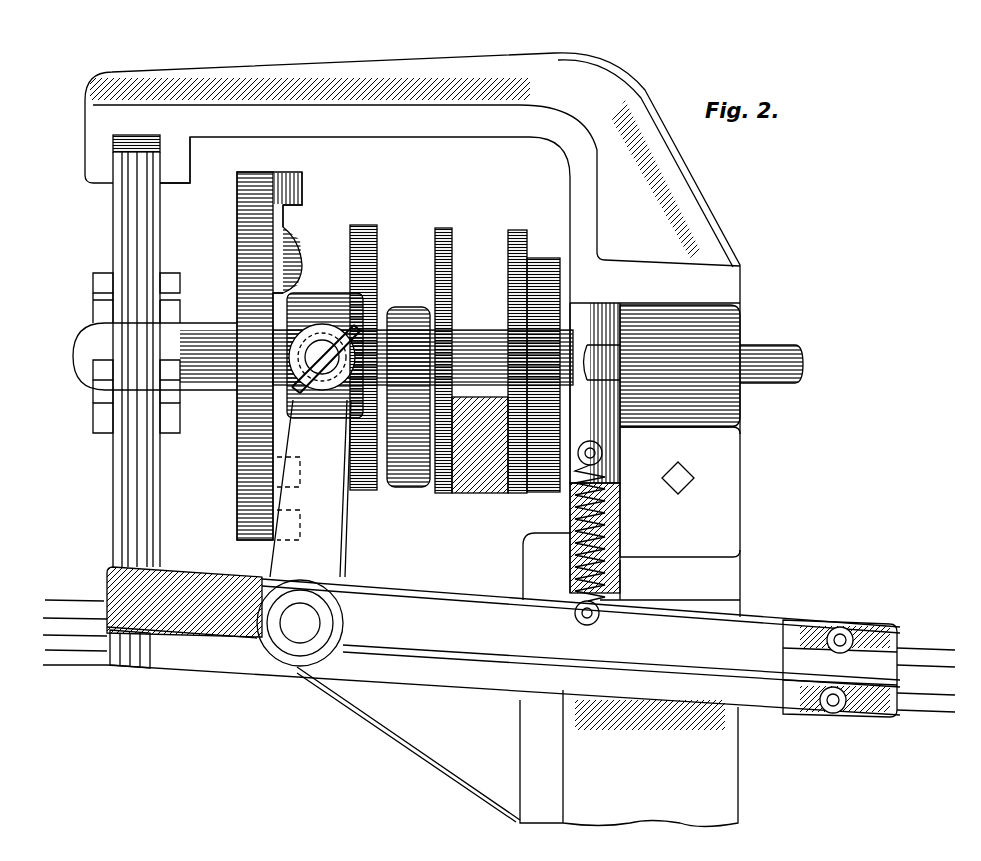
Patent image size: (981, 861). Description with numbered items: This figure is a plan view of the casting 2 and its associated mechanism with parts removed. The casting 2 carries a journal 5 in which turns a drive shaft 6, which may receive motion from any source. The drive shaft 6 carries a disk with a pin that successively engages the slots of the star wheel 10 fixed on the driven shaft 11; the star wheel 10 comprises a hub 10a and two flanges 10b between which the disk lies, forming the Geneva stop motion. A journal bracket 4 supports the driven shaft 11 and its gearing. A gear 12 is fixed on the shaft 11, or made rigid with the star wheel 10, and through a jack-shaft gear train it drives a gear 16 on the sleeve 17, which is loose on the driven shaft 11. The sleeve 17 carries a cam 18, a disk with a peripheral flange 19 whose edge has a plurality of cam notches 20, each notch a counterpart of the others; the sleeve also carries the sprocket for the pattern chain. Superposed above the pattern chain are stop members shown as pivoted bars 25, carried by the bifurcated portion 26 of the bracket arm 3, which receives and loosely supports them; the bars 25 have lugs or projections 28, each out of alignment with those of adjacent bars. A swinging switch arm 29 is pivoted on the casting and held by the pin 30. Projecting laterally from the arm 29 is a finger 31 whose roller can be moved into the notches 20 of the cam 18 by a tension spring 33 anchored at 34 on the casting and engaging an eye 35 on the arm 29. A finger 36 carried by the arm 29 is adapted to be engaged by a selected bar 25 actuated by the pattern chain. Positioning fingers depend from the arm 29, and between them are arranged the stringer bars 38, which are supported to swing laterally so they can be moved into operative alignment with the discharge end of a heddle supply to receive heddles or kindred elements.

The casting 2 is at (725, 580).
The bracket arm 3 is at (475, 138).
The journal bracket 4 is at (478, 317).
The journal 5 is at (741, 398).
The drive shaft 6 is at (765, 347).
The star wheel 10 is at (516, 230).
The hub 10a is at (460, 327).
The flanges 10b is at (440, 482).
The driven shaft 11 is at (573, 340).
The gear 12 is at (533, 258).
The gear 16 is at (365, 225).
The sleeve 17 is at (345, 295).
The cam 18 is at (237, 440).
The peripheral flange 19 is at (305, 232).
The cam notches 20 is at (286, 288).
The pivoted bars 25 is at (150, 500).
The bifurcated portion 26 is at (193, 160).
The lugs or projections 28 is at (140, 652).
The swinging switch arm 29 is at (430, 592).
The pin 30 is at (300, 640).
The finger 31 is at (325, 532).
The tension spring 33 is at (612, 537).
The anchor 34 is at (600, 456).
The eye 35 is at (575, 622).
The finger 36 is at (107, 584).
The stringer bars 38 is at (920, 668).